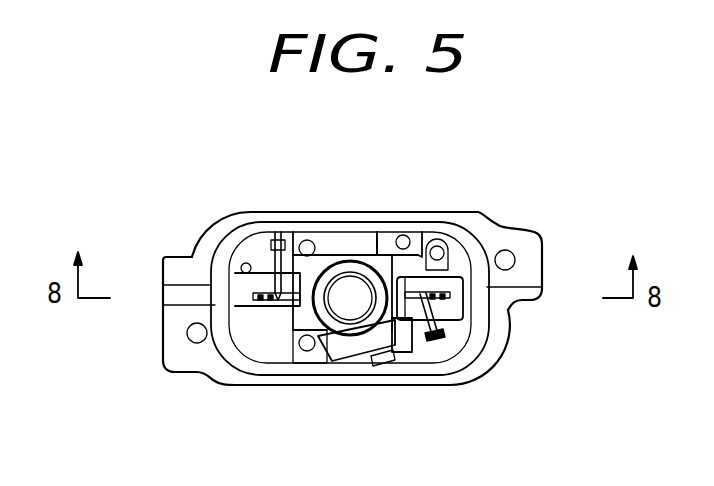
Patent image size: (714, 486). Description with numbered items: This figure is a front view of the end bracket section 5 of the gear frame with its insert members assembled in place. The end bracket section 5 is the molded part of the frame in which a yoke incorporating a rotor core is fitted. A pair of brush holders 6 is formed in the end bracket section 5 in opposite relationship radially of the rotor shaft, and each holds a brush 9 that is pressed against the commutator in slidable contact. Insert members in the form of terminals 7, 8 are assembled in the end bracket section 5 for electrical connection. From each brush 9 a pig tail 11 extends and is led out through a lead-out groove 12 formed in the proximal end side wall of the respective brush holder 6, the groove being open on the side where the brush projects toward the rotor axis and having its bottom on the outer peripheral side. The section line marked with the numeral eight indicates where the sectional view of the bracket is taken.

The end bracket section 5 is at (253, 376).
The brush holders 6 is at (240, 306).
The terminal 7 is at (336, 348).
The terminal 8 is at (357, 240).
The brushes 9 is at (413, 315).
The pig tails 11 is at (285, 237).
The lead-out groove 12 is at (276, 304).